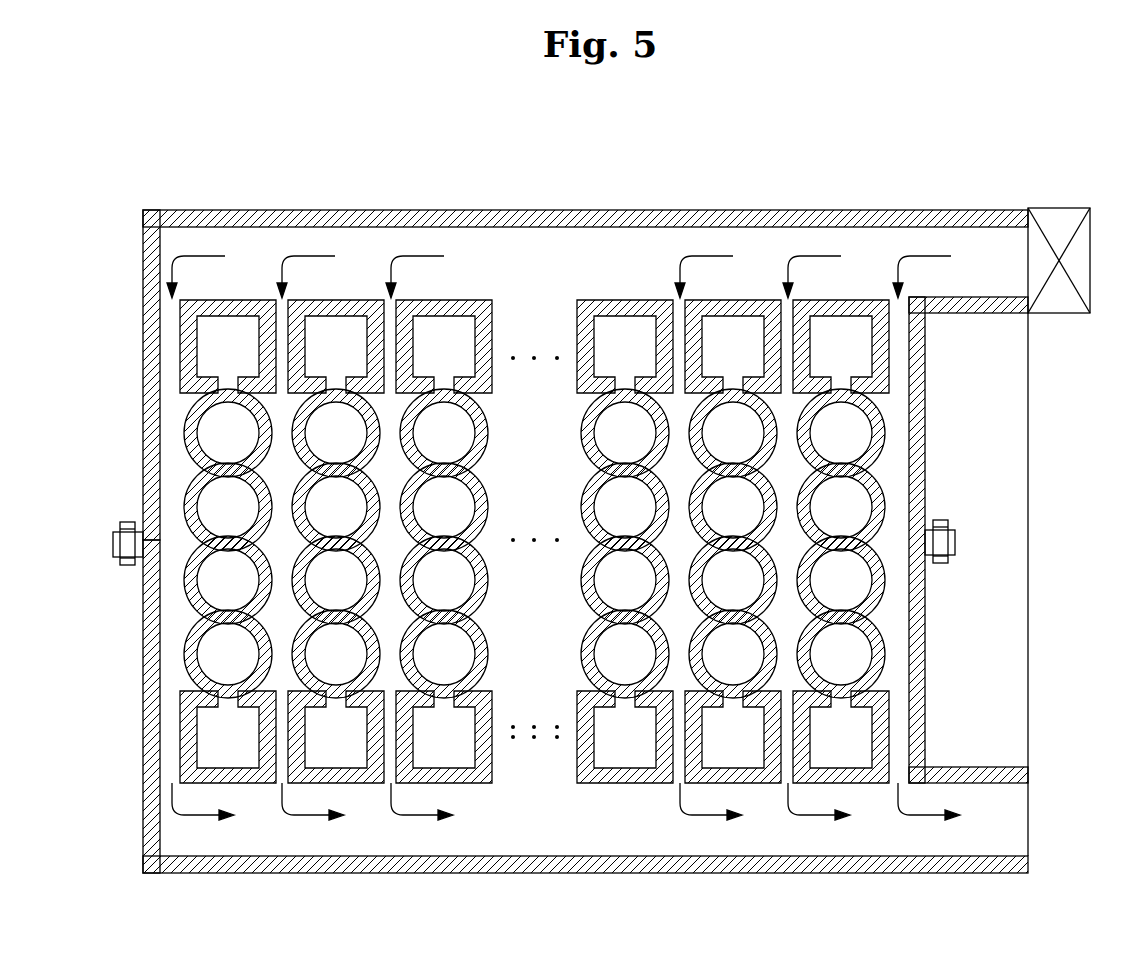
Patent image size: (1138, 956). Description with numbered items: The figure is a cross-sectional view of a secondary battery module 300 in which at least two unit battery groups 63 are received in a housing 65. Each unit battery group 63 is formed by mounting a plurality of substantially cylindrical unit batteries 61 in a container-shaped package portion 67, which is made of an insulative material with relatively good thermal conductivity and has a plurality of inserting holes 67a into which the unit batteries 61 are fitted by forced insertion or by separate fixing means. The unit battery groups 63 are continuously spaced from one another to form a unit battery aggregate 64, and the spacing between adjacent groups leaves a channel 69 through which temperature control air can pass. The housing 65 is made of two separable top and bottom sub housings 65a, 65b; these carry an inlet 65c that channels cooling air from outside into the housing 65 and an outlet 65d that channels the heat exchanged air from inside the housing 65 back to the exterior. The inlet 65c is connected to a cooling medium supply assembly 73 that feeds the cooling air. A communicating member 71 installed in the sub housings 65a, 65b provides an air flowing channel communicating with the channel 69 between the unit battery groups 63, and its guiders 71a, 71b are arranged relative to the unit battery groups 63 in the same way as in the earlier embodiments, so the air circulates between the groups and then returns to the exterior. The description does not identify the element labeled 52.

The battery module 300 is at (585, 110).
The housing 65 is at (134, 201).
The top sub housing 65a is at (143, 333).
The bottom sub housing 65b is at (143, 712).
The inlet 65c is at (1027, 258).
The outlet 65d is at (1030, 830).
The partition wall 52 is at (928, 578).
The cooling medium supply assembly 73 is at (1090, 258).
The communicating member 71 is at (246, 284).
The guider 71a is at (348, 302).
The guider 71b is at (362, 783).
The unit battery aggregate 64 is at (477, 543).
The inserting hole 67a is at (171, 433).
The unit battery group 63 is at (181, 507).
The unit battery 61 is at (182, 580).
The channel 69 is at (236, 617).
The package portion 67 is at (182, 654).